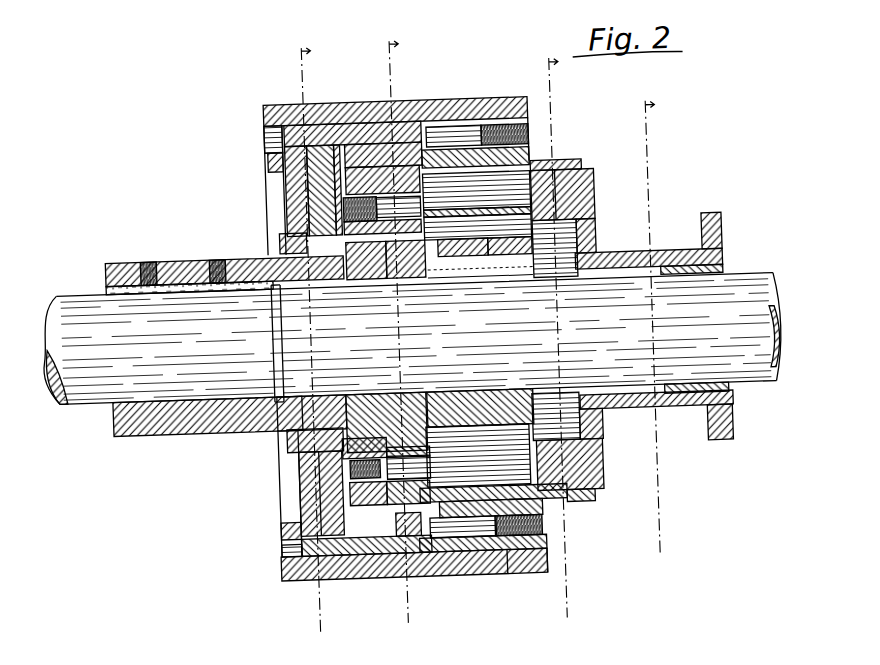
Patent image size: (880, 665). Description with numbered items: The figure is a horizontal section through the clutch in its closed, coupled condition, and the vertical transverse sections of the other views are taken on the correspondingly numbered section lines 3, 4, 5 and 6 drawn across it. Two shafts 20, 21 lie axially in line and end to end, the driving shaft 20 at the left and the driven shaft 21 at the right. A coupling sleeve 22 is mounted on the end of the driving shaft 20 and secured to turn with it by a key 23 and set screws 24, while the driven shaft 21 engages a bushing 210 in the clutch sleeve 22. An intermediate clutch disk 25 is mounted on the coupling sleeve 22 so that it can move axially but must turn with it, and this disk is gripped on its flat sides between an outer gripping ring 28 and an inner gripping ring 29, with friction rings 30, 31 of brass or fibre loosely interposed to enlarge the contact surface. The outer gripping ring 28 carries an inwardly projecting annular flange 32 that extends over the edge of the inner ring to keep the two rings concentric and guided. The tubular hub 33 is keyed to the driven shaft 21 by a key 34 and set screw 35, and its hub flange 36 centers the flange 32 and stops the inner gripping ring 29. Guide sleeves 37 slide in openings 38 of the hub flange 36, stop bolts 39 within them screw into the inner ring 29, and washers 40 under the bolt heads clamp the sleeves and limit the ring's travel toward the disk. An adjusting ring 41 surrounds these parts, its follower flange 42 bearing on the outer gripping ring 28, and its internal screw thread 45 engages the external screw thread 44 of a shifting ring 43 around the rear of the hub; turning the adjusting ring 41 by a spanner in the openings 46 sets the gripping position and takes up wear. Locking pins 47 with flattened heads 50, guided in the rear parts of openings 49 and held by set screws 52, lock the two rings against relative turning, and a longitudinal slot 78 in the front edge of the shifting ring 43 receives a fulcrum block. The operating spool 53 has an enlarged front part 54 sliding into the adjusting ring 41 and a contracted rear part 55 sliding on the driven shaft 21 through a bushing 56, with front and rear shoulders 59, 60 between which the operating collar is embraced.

The section line 3- 3 is at (309, 340).
The section line 4- 4 is at (397, 334).
The section line 5- 5 is at (559, 342).
The section line 6- 6 is at (659, 329).
The driving shaft 20 is at (159, 347).
The driven shaft 21 is at (527, 334).
The coupling sleeve 22 is at (128, 420).
The key 23 is at (168, 283).
The set screws 24 is at (222, 252).
The clutch disk 25 is at (311, 576).
The outer gripping ring 28 is at (287, 186).
The inner gripping ring 29 is at (340, 126).
The friction ring 30 is at (276, 318).
The friction ring 31 is at (292, 343).
The annular flange 32 is at (308, 101).
The hub 33 is at (499, 398).
The key 34 is at (517, 284).
The set screw 35 is at (456, 279).
The hub flange 36 is at (424, 450).
The guide sleeves 37 is at (374, 280).
The openings 38 is at (405, 280).
The stop bolts 39 is at (381, 200).
The washers 40 is at (478, 227).
The adjusting ring 41 is at (516, 100).
The follower flange 42 is at (275, 526).
The shifting ring 43 is at (545, 548).
The external screw thread 44 is at (528, 568).
The internal screw thread 45 is at (502, 566).
The openings 46 is at (275, 546).
The locking pins 47 is at (474, 558).
The openings 49 is at (452, 558).
The flattened head 50 is at (412, 556).
The set screw 52 is at (540, 530).
The operating spool 53 is at (581, 329).
The enlarged front part 54 is at (501, 328).
The contracted rear part 55 is at (730, 412).
The bushing 56 is at (726, 279).
The front shoulder 59 is at (597, 246).
The rear shoulder 60 is at (705, 243).
The longitudinal slot 78 is at (441, 124).
The bushing 210 is at (268, 424).